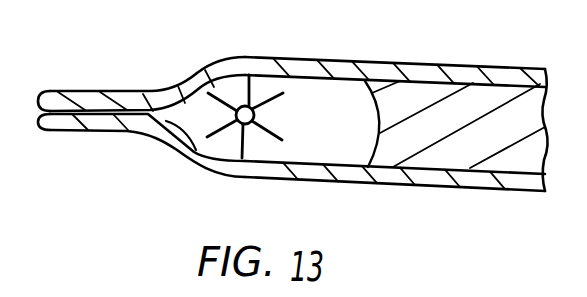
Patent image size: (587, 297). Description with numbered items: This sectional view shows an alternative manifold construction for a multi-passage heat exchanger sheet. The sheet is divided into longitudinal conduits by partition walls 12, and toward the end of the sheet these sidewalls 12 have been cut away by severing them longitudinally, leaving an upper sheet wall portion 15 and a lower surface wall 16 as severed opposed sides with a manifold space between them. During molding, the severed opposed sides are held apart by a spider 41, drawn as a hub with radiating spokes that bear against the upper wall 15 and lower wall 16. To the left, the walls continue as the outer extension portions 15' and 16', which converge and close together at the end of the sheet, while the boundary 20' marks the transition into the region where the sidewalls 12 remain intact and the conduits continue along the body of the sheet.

The partition wall 12 is at (441, 108).
The upper sheet wall portion 15 is at (395, 50).
The lower surface wall 16 is at (395, 198).
The upper wall extension 15' is at (141, 72).
The lower wall extension 16' is at (141, 158).
The end face 20' is at (395, 159).
The spider 41 is at (238, 108).